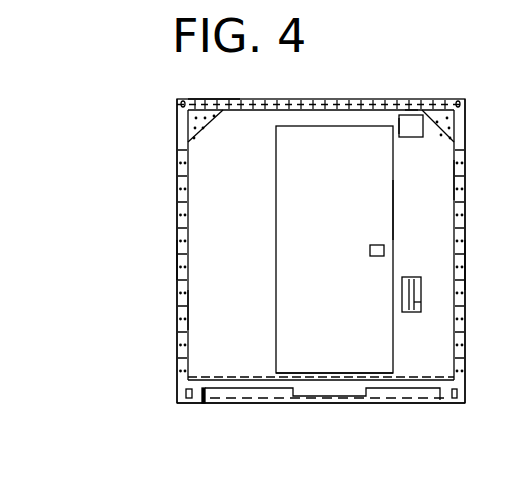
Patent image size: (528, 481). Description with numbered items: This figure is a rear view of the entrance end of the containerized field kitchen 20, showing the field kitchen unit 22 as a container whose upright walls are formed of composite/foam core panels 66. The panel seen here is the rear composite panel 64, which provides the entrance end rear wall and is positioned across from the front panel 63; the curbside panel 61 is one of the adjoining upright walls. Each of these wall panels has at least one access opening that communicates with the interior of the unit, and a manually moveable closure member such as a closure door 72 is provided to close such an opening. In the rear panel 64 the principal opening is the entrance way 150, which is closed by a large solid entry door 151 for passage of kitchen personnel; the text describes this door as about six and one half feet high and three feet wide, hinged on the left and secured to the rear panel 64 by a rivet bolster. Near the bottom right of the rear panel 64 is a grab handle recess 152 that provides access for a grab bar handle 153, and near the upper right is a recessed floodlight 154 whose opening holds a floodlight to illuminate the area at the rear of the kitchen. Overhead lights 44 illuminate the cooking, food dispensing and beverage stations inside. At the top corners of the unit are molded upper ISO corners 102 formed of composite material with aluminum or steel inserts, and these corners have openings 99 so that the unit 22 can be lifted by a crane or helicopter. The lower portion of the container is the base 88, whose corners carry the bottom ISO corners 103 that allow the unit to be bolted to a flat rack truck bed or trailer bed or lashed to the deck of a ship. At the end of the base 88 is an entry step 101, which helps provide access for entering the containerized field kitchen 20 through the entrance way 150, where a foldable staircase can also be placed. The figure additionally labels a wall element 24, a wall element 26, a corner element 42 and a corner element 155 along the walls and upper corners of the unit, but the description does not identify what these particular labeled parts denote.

The containerized field kitchen 20 is at (180, 99).
The openings 99 is at (177, 108).
The upper ISO corners 102 is at (213, 108).
The closure door 72 is at (315, 150).
The overhead lights 44 is at (397, 118).
The recessed floodlight 154 is at (405, 112).
The corner brace 155 is at (422, 110).
The field kitchen unit 22 is at (462, 99).
The composite/foam core panels 66 is at (237, 170).
The lock box 42 is at (405, 137).
The right wall panel 26 is at (462, 186).
The left side wall 24 is at (178, 208).
The entry door 151 is at (375, 211).
The front panel 63 is at (178, 258).
The curbside panel 61 is at (462, 263).
The grab handle recess 152 is at (422, 288).
The grab bar handle 153 is at (422, 300).
The rear composite panel 64 is at (237, 308).
The entrance way 150 is at (395, 362).
The base 88 is at (204, 403).
The entry step 101 is at (332, 393).
The bottom ISO corners 103 is at (466, 393).